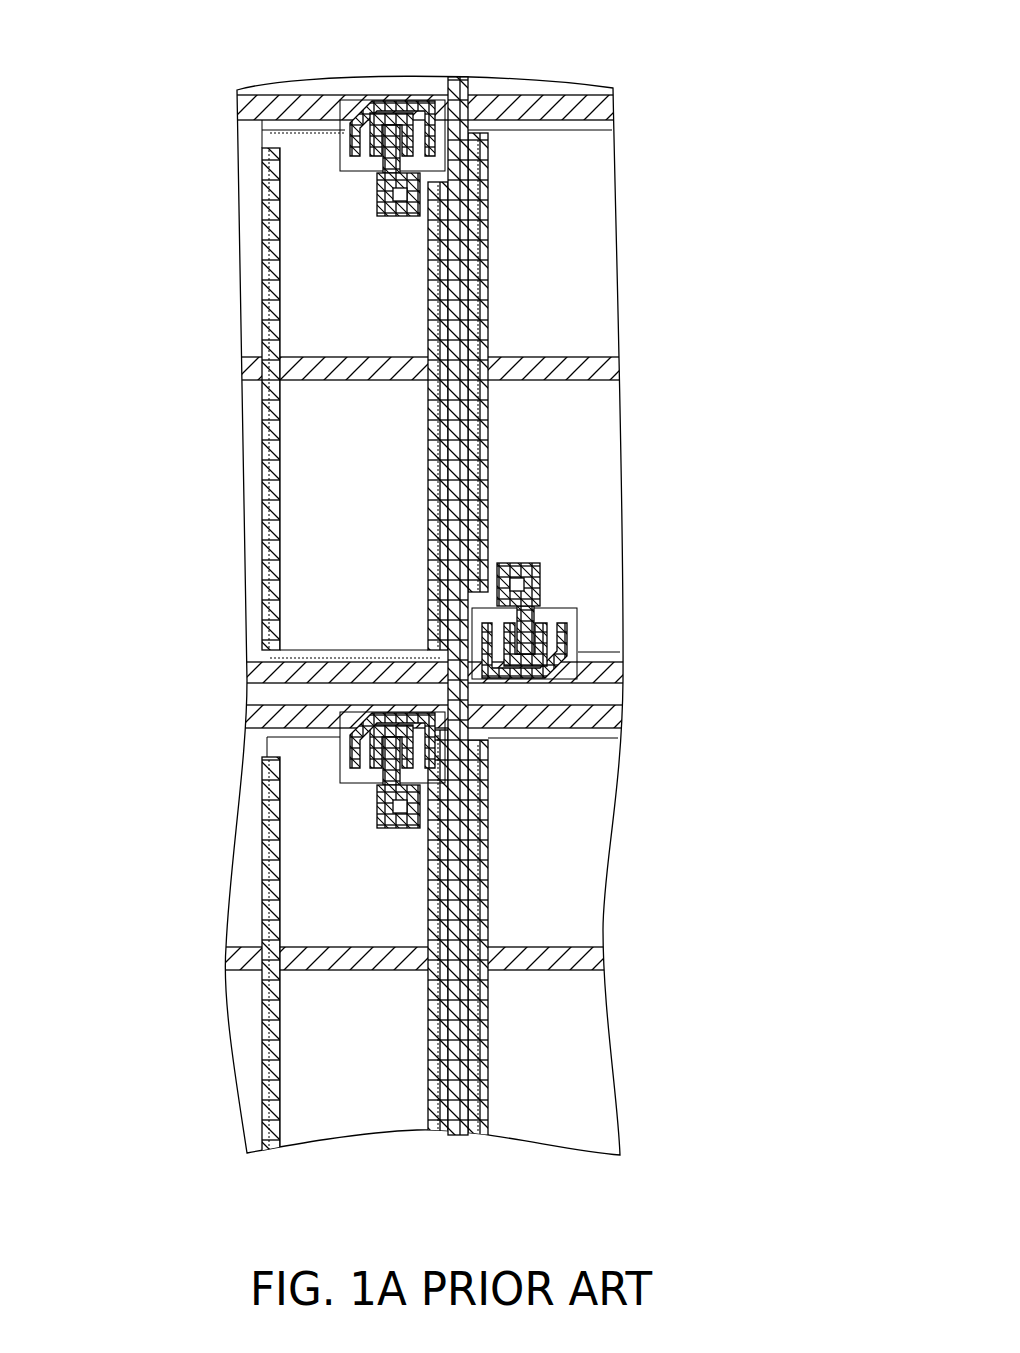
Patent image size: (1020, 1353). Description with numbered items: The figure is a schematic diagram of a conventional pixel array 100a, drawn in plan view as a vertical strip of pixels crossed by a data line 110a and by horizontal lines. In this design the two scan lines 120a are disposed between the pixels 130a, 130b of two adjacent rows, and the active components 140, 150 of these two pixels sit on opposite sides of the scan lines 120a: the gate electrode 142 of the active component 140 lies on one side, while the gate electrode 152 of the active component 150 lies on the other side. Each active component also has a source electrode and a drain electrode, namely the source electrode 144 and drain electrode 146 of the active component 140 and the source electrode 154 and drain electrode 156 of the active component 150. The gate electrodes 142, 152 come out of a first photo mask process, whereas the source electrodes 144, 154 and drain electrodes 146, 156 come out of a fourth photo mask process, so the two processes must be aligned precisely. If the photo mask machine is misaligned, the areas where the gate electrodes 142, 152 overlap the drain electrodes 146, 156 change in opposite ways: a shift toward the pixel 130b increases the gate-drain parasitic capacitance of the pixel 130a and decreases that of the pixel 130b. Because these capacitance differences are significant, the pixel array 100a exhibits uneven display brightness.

The pixel array 100a is at (688, 1080).
The data line 110a is at (454, 80).
The scan lines 120a is at (608, 717).
The pixel 130a is at (292, 920).
The pixel 130b is at (585, 400).
The active component 140 is at (262, 798).
The gate electrode 142 is at (345, 768).
The source electrode 144 is at (335, 717).
The drain electrode 146 is at (375, 820).
The active component 150 is at (626, 577).
The gate electrode 152 is at (575, 640).
The source electrode 154 is at (532, 618).
The drain electrode 156 is at (537, 563).